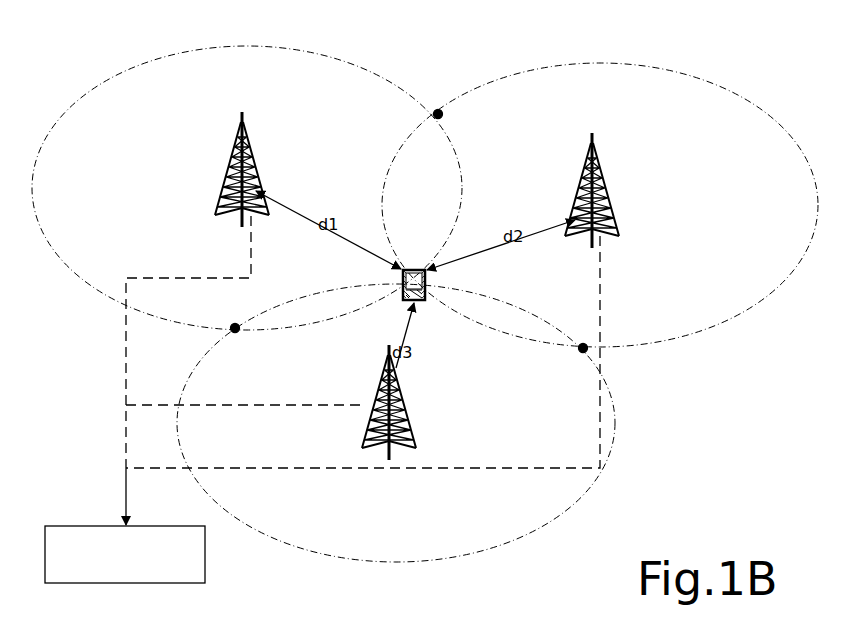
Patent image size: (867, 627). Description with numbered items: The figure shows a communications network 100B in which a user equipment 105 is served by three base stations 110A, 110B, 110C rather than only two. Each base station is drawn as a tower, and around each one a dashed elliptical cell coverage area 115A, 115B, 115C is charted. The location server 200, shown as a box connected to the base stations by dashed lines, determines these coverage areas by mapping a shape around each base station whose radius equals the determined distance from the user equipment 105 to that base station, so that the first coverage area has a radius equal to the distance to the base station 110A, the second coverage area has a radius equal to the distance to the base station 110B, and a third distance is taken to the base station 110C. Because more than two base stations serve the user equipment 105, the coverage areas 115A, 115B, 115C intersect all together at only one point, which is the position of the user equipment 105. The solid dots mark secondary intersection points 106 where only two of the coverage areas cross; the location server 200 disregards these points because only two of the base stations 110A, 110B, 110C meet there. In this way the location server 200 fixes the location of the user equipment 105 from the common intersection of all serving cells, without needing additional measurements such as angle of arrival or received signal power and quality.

The communications network 100B is at (512, 52).
The user equipment 105 is at (425, 272).
The secondary intersection points 106 is at (442, 117).
The base station 110A is at (246, 114).
The base station 110B is at (594, 135).
The base station 110C is at (386, 353).
The cell coverage area 115A is at (258, 46).
The cell coverage area 115B is at (747, 102).
The cell coverage area 115C is at (177, 424).
The location server 200 is at (205, 555).